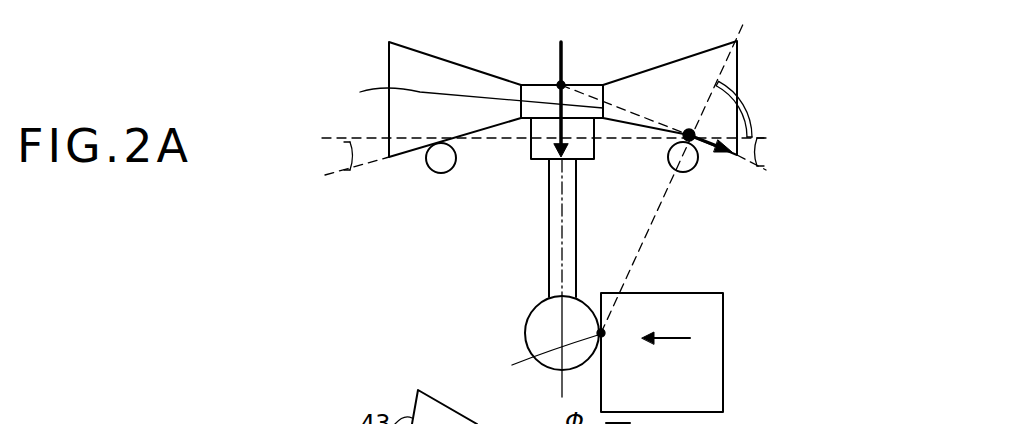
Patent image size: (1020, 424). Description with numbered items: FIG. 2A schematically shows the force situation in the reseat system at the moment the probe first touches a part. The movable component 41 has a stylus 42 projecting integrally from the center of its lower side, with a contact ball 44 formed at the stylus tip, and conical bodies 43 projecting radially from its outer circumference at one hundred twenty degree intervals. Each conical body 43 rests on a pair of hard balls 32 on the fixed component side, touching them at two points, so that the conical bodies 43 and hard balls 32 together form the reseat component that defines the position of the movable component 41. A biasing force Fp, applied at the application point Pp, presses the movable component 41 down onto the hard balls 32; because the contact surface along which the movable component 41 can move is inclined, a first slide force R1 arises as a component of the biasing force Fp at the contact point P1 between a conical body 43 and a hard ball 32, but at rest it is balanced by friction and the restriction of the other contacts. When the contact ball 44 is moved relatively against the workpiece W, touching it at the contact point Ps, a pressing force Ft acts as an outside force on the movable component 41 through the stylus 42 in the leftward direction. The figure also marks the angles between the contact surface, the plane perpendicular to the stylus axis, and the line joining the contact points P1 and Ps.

The movable component 41 is at (578, 100).
The stylus 42 is at (555, 226).
The conical bodies 43 is at (438, 85).
The contact ball 44 is at (540, 323).
The hard balls 32 is at (441, 160).
The workpiece W is at (702, 370).
The application point of the biasing force Pp is at (558, 83).
The biasing force Fp is at (465, 92).
The contact point of the conical body and the hard ball P1 is at (686, 130).
The first slide force R1 is at (716, 146).
The contact point of the contact ball and the workpiece Ps is at (539, 356).
The pressing force Ft is at (666, 323).